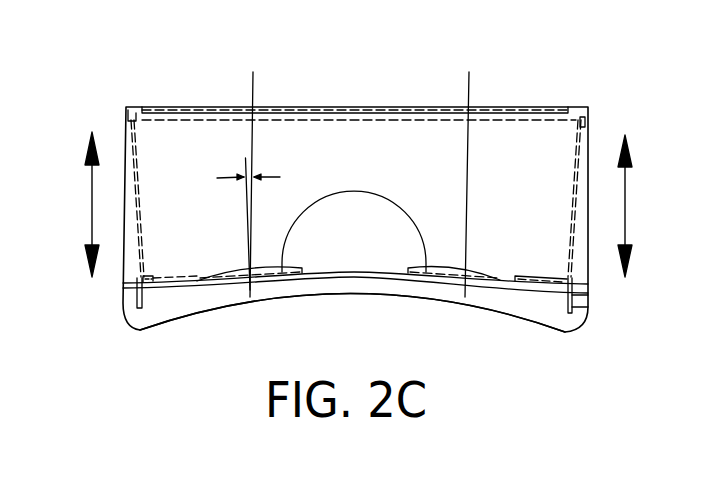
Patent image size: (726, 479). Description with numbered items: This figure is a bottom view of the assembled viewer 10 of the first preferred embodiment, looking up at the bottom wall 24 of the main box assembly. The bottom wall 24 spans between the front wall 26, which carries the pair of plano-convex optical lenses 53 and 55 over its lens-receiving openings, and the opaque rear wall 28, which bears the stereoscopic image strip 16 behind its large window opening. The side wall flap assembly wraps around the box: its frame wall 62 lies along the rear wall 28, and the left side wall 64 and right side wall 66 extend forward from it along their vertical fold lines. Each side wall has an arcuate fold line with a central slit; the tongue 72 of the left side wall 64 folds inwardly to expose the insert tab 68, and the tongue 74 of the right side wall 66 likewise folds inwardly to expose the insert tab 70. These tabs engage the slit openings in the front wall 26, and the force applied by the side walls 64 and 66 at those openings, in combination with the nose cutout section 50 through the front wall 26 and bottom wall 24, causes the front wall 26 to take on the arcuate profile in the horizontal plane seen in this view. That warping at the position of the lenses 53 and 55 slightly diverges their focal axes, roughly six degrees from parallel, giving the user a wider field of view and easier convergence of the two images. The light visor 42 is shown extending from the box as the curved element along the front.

The viewer 10 is at (576, 83).
The stereoscopic image strip 16 is at (323, 112).
The bottom wall 24 is at (175, 133).
The front wall 26 is at (200, 285).
The rear wall 28 is at (506, 107).
The light visor 42 is at (517, 303).
The nose cutout section 50 is at (343, 192).
The optical lens 53 is at (230, 273).
The optical lens 55 is at (453, 277).
The frame wall 62 is at (405, 120).
The left side wall 64 is at (130, 138).
The right side wall 66 is at (587, 125).
The insert tab 68 is at (137, 300).
The insert tab 70 is at (587, 307).
The tongue 72 is at (160, 273).
The tongue 74 is at (542, 277).